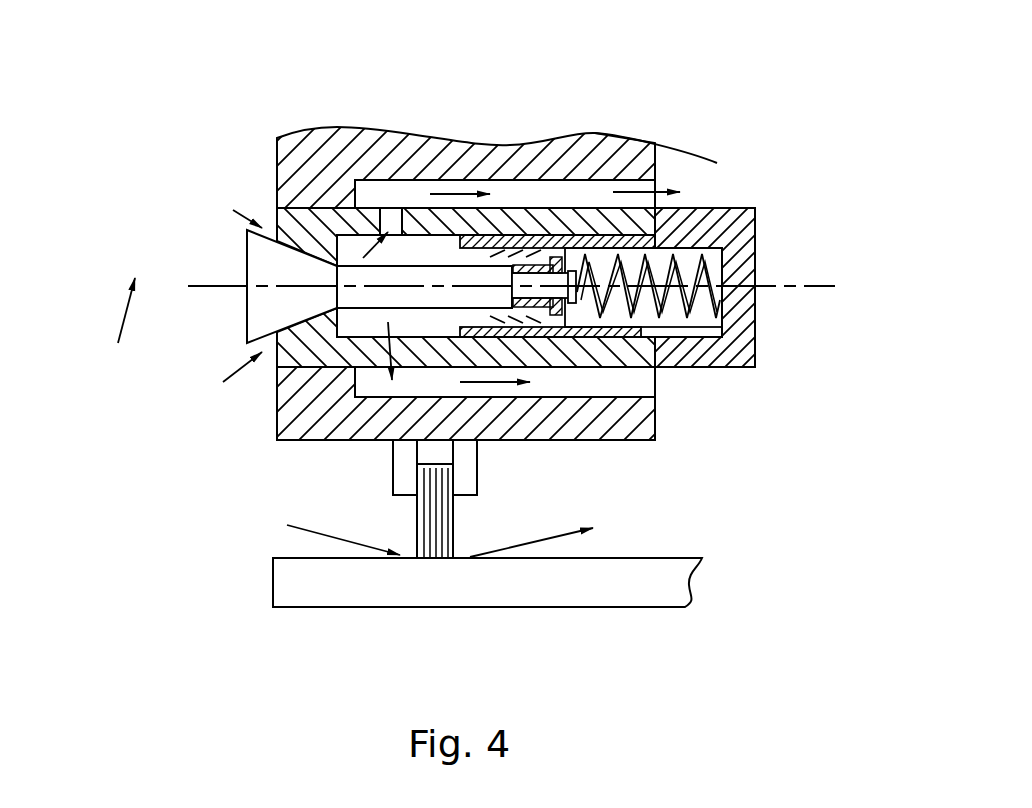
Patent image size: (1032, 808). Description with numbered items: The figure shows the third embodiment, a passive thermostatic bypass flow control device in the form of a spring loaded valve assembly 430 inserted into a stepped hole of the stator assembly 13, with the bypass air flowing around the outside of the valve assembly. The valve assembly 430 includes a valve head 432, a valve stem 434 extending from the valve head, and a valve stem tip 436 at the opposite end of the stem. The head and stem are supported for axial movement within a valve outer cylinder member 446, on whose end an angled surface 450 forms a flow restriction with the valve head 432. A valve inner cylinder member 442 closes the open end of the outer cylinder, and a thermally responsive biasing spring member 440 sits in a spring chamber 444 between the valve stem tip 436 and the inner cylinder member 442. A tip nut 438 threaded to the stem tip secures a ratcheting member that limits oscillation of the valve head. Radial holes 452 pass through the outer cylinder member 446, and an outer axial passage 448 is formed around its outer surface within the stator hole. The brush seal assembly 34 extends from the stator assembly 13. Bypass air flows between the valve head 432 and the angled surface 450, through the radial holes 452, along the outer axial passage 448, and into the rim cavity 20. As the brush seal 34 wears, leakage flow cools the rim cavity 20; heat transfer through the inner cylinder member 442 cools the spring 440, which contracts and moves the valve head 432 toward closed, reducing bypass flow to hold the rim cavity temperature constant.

The valve assembly 430 is at (163, 158).
The stator assembly 13 is at (353, 147).
The radial holes 452 is at (390, 223).
The valve stem 434 is at (402, 275).
The tip nut 438 is at (553, 282).
The valve stem tip 436 is at (648, 233).
The thermally responsive biasing spring member 440 is at (568, 277).
The rim cavity 20 is at (882, 278).
The spring chamber 444 is at (703, 317).
The valve inner cylinder member 442 is at (723, 349).
The valve outer cylinder member 446 is at (572, 353).
The outer axial passage 448 is at (570, 382).
The valve head 432 is at (263, 263).
The angled surface 450 is at (277, 333).
The brush seal assembly 34 is at (413, 517).